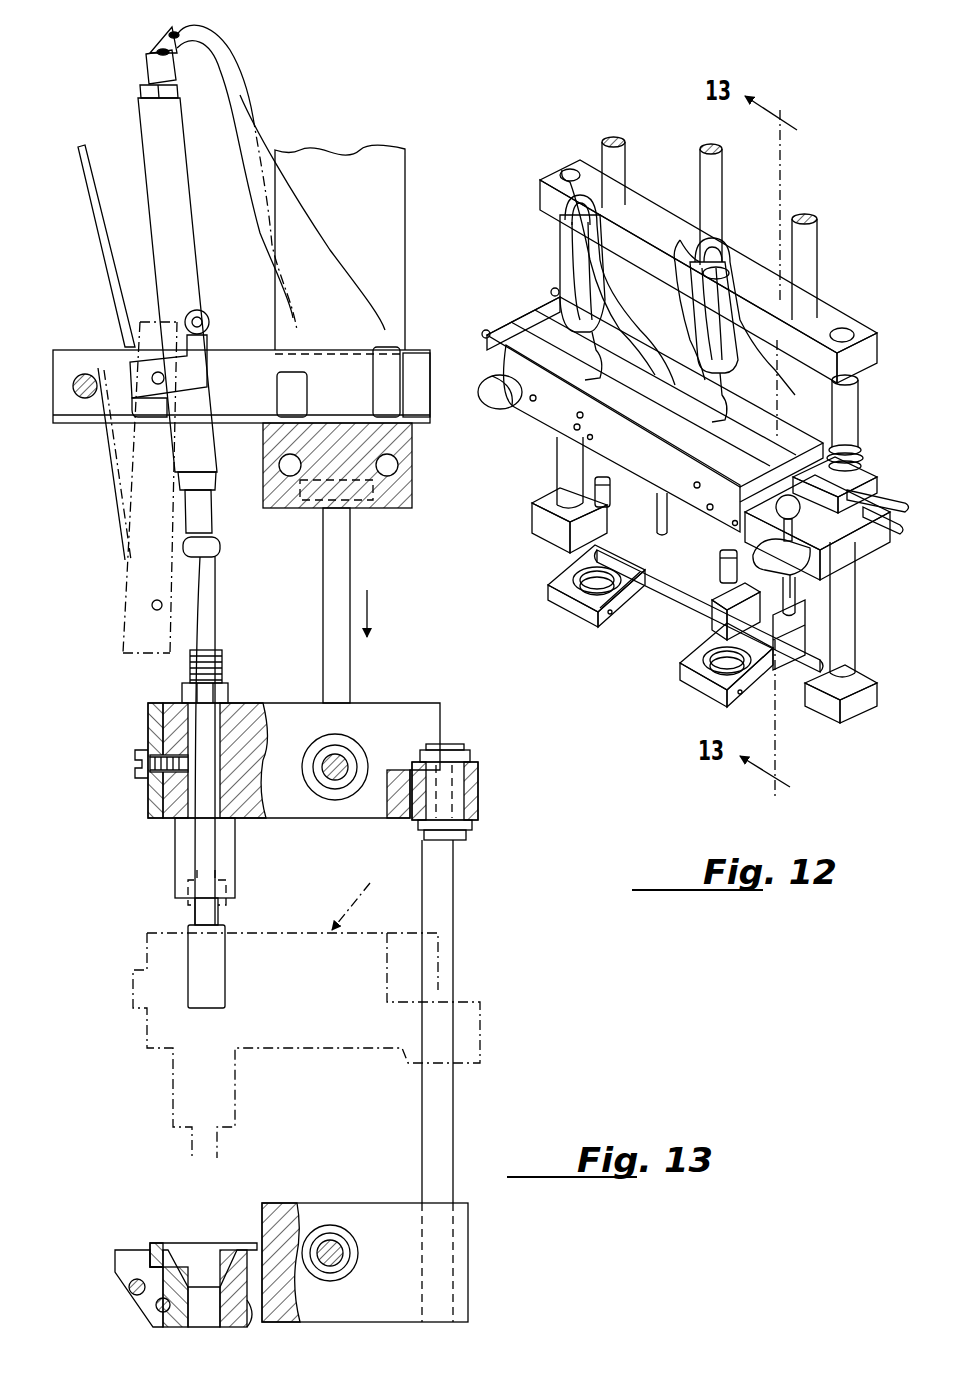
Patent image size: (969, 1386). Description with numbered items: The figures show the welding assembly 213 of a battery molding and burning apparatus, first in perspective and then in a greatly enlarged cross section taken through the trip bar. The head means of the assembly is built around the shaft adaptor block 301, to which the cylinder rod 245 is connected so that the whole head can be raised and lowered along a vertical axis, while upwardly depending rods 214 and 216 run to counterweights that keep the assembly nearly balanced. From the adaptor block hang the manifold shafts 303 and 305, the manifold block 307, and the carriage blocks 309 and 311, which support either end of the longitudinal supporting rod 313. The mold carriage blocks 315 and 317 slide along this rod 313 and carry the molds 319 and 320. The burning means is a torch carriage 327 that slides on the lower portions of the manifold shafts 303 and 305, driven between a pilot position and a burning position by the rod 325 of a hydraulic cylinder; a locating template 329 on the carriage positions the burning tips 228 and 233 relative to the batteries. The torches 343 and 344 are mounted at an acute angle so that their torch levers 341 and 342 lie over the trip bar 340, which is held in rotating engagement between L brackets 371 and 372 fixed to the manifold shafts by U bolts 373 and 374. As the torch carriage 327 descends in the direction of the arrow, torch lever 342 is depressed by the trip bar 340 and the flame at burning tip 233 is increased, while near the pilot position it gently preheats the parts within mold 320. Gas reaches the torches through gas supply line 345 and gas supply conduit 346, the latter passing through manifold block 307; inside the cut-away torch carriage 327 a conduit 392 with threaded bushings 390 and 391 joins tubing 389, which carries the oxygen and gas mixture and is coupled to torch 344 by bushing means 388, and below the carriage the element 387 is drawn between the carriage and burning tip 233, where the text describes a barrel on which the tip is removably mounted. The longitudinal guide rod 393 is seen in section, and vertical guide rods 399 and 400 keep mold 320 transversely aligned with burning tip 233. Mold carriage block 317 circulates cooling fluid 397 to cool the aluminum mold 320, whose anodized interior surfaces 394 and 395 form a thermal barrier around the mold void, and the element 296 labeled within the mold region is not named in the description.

In FIG. 12, the welding assembly 213 is at (569, 278).
In FIG. 12, the upwardly depending rod 214 is at (615, 137).
In FIG. 12, the upwardly depending rod 216 is at (810, 213).
In FIG. 12, the burning tip 228 is at (610, 497).
In FIG. 13, the burning tip 233 is at (208, 985).
In FIG. 12, the burning tip 233 is at (737, 575).
In FIG. 12, the cylinder rod 245 is at (722, 160).
In FIG. 13, the nozzle insert 296 is at (232, 1250).
In FIG. 12, the shaft adaptor block 301 is at (838, 318).
In FIG. 12, the manifold shaft 303 is at (557, 458).
In FIG. 12, the manifold shaft 305 is at (855, 652).
In FIG. 13, the manifold block 307 is at (412, 508).
In FIG. 12, the manifold block 307 is at (795, 432).
In FIG. 12, the carriage block 309 is at (532, 515).
In FIG. 12, the carriage block 311 is at (825, 700).
In FIG. 13, the longitudinal supporting rod 313 is at (335, 1238).
In FIG. 12, the longitudinal supporting rod 313 is at (668, 588).
In FIG. 12, the mold carriage block 315 is at (576, 592).
In FIG. 13, the mold carriage block 317 is at (115, 1287).
In FIG. 12, the mold carriage block 317 is at (689, 673).
In FIG. 12, the mold 319 is at (573, 575).
In FIG. 13, the mold 320 is at (202, 1268).
In FIG. 12, the mold 320 is at (703, 662).
In FIG. 13, the rod 325 is at (350, 668).
In FIG. 13, the torch carriage 327 is at (276, 789).
In FIG. 12, the torch carriage 327 is at (865, 555).
In FIG. 12, the locating template 329 is at (830, 598).
In FIG. 13, the trip bar 340 is at (90, 402).
In FIG. 12, the trip bar 340 is at (492, 403).
In FIG. 12, the torch lever 341 is at (560, 272).
In FIG. 13, the torch lever 342 is at (105, 243).
In FIG. 12, the torch lever 342 is at (755, 375).
In FIG. 12, the torch 343 is at (565, 240).
In FIG. 13, the torch 344 is at (178, 236).
In FIG. 12, the torch 344 is at (727, 325).
In FIG. 12, the gas supply line 345 is at (568, 180).
In FIG. 13, the gas supply conduit 346 is at (150, 40).
In FIG. 12, the gas supply conduit 346 is at (688, 256).
In FIG. 12, the L bracket 371 is at (500, 338).
In FIG. 13, the L bracket 372 is at (415, 353).
In FIG. 12, the L bracket 372 is at (860, 425).
In FIG. 12, the U bolt 373 is at (862, 450).
In FIG. 12, the U bolt 374 is at (550, 292).
In FIG. 13, the guide sleeve 387 is at (235, 872).
In FIG. 13, the bushing means 388 is at (218, 552).
In FIG. 13, the tubing 389 is at (212, 622).
In FIG. 13, the threaded bushing 390 is at (228, 692).
In FIG. 13, the threaded bushing 391 is at (222, 665).
In FIG. 13, the conduit 392 is at (148, 796).
In FIG. 13, the longitudinal guide rod 393 is at (335, 755).
In FIG. 13, the interior surface 394 is at (225, 1328).
In FIG. 13, the interior surface 395 is at (210, 1280).
In FIG. 13, the cooling fluid 397 is at (128, 1284).
In FIG. 12, the vertical guide rod 399 is at (667, 520).
In FIG. 13, the vertical guide rod 400 is at (440, 1102).
In FIG. 12, the vertical guide rod 400 is at (800, 598).